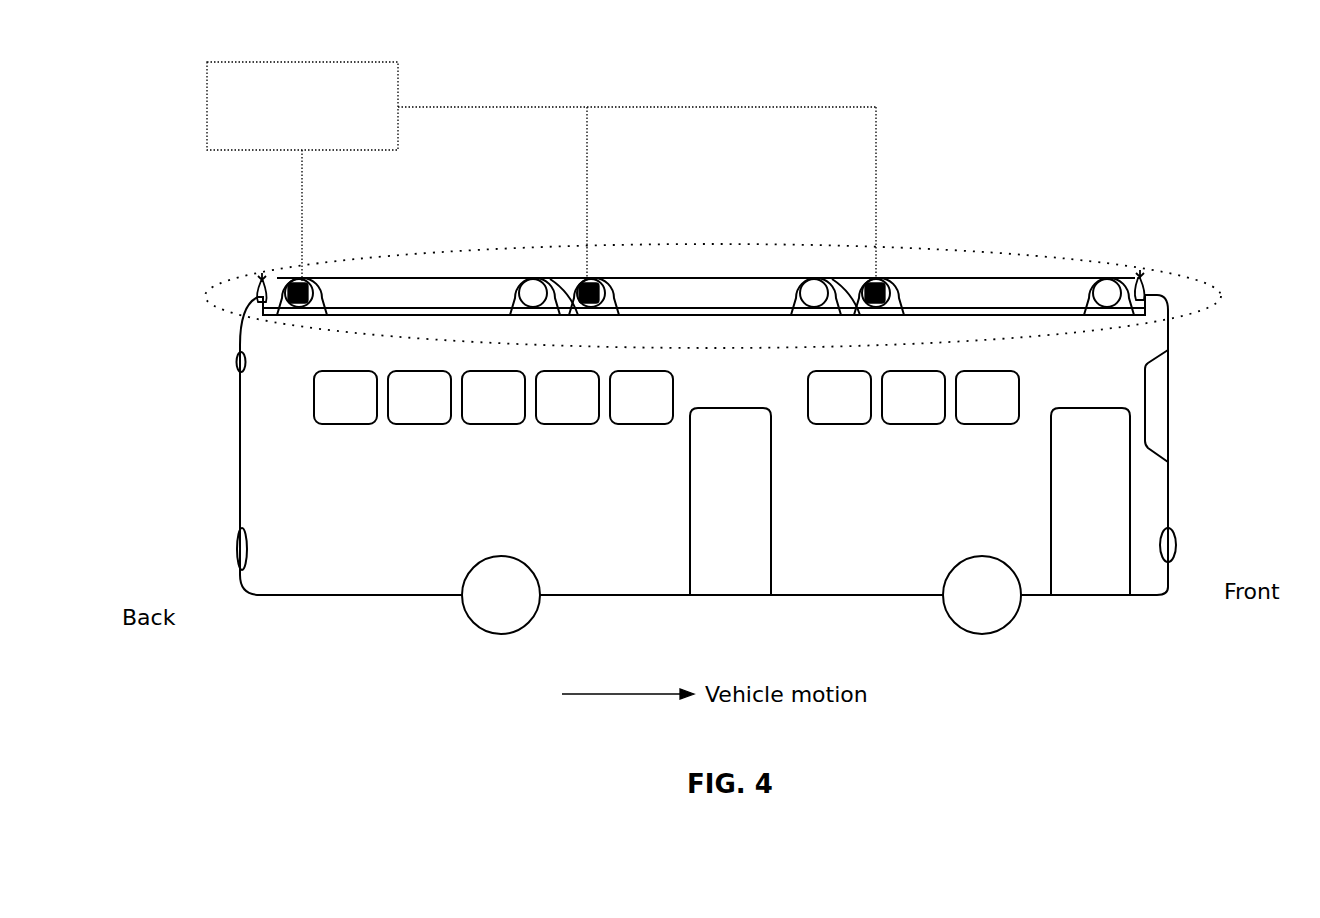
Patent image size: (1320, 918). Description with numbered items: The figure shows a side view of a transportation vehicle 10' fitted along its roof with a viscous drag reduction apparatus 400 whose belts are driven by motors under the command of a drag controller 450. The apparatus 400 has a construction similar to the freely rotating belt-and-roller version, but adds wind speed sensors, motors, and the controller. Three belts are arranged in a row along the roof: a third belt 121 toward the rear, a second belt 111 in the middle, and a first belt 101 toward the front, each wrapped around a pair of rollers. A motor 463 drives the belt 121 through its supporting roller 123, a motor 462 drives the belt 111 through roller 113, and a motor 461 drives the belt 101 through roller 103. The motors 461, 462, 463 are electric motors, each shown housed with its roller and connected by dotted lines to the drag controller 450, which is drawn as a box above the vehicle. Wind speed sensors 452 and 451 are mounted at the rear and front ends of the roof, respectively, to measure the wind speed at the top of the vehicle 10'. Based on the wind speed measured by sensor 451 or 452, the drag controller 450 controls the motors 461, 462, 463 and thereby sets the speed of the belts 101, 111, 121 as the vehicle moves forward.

The vehicle 10' is at (736, 336).
The first belt 101 is at (1007, 277).
The roller 103 is at (883, 277).
The second belt 111 is at (733, 277).
The roller 113 is at (593, 273).
The third belt 121 is at (477, 280).
The roller 123 is at (287, 287).
The viscous drag reduction apparatus 400 is at (1095, 264).
The drag controller 450 is at (541, 172).
The wind speed sensor 451 is at (1147, 292).
The wind speed sensor 452 is at (252, 290).
The motor 461 is at (903, 278).
The motor 462 is at (615, 280).
The motor 463 is at (323, 297).